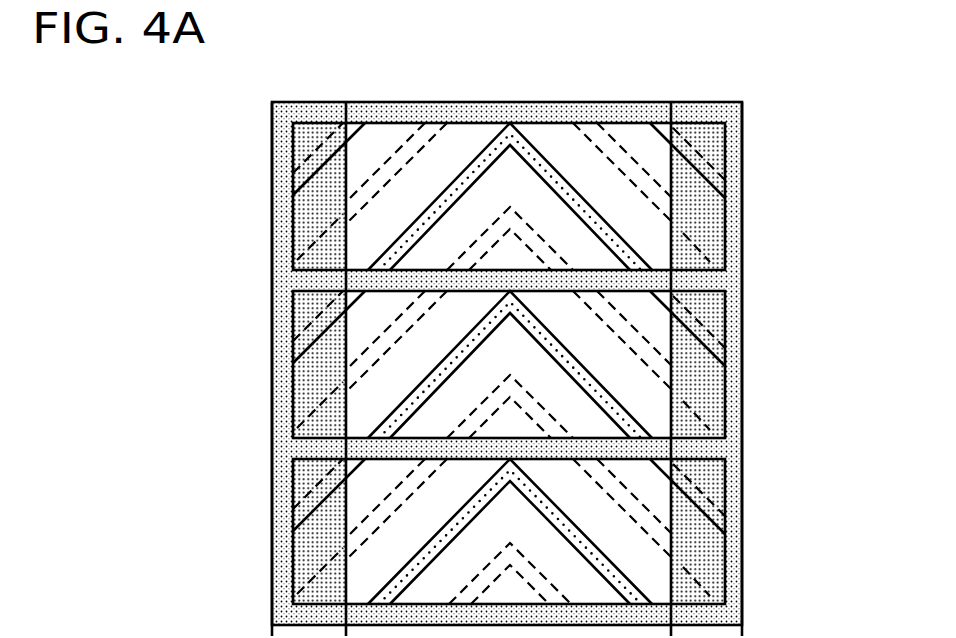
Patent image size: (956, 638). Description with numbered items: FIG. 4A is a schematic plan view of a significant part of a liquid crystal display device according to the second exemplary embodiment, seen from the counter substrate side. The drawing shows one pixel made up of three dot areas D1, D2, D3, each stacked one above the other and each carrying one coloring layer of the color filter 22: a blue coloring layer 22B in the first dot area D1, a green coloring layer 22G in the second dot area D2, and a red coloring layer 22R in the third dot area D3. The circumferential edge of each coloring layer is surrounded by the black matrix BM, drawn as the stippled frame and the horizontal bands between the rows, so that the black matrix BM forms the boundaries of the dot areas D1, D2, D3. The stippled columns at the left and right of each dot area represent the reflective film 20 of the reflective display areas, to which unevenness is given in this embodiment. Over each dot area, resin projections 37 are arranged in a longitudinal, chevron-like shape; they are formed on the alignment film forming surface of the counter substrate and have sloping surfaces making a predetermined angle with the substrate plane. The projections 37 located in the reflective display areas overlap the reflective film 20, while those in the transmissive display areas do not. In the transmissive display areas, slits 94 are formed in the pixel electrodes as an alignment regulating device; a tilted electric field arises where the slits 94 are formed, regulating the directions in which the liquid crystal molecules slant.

The color filter 22 is at (742, 119).
The blue coloring layer 22B is at (707, 218).
The green coloring layer 22G is at (707, 383).
The red coloring layer 22R is at (710, 548).
The reflective film 20 is at (710, 310).
The black matrix BM is at (280, 450).
The projection 37 is at (617, 492).
The slit 94 is at (590, 545).
The dot area D1 is at (310, 223).
The dot area D2 is at (307, 398).
The dot area D3 is at (300, 562).